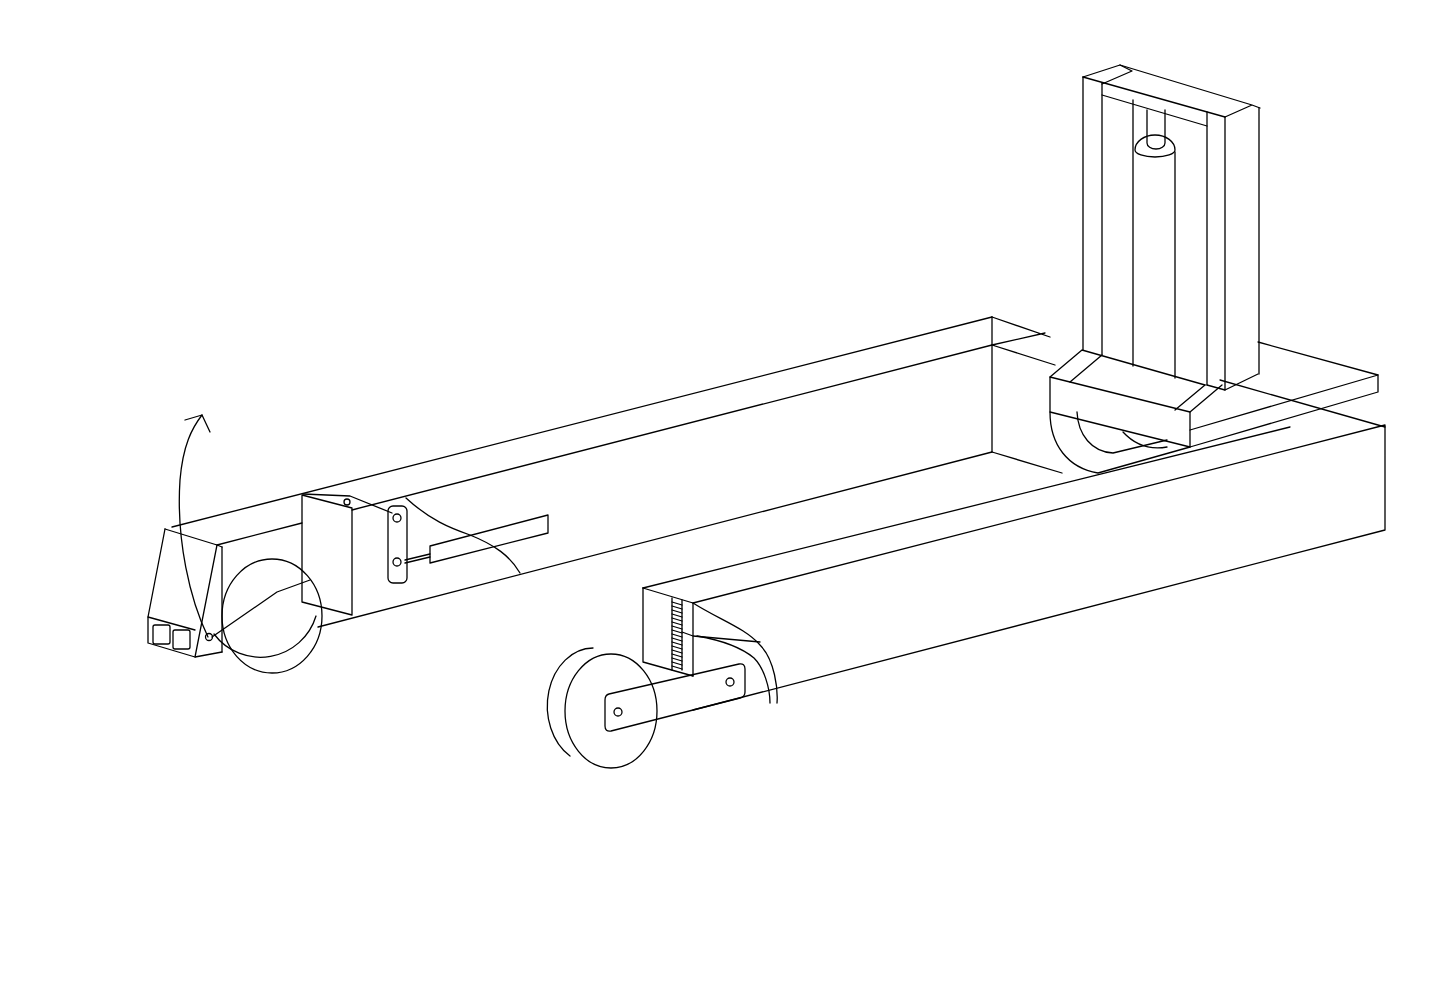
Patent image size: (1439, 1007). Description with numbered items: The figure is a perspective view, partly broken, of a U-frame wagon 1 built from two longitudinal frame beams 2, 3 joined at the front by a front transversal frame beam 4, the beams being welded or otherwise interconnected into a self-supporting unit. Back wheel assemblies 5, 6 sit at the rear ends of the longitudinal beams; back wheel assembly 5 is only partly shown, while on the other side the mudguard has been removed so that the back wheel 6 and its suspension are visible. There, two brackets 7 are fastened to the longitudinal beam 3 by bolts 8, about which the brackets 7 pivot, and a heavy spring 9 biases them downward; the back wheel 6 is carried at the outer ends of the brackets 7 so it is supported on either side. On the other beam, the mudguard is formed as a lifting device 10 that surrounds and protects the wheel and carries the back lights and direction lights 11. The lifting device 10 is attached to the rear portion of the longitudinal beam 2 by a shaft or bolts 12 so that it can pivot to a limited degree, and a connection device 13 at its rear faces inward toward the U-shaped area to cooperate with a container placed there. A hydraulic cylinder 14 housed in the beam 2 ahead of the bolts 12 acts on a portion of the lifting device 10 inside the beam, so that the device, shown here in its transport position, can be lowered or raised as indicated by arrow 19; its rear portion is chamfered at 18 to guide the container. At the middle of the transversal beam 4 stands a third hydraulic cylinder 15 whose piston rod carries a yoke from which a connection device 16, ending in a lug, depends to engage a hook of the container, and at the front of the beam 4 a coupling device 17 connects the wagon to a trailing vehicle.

The U-frame wagon 1 is at (764, 318).
The longitudinal frame beam 2 is at (652, 415).
The longitudinal frame beam 3 is at (1058, 620).
The front transversal frame beam 4 is at (1045, 345).
The back wheel assembly 5 is at (318, 637).
The back wheel 6 is at (575, 763).
The bracket 7 is at (672, 703).
The bolt 8 is at (778, 702).
The heavy spring 9 is at (731, 690).
The lifting device 10 is at (254, 480).
The direction lights 11 is at (167, 653).
The shaft or bolts 12 is at (395, 508).
The connection device 13 is at (284, 653).
The hydraulic cylinder 14 is at (473, 553).
The third hydraulic cylinder 15 is at (1175, 190).
The connection device 16 is at (1052, 450).
The coupling device 17 is at (1365, 365).
The chamfer 18 is at (205, 657).
The arrow 19 is at (180, 472).